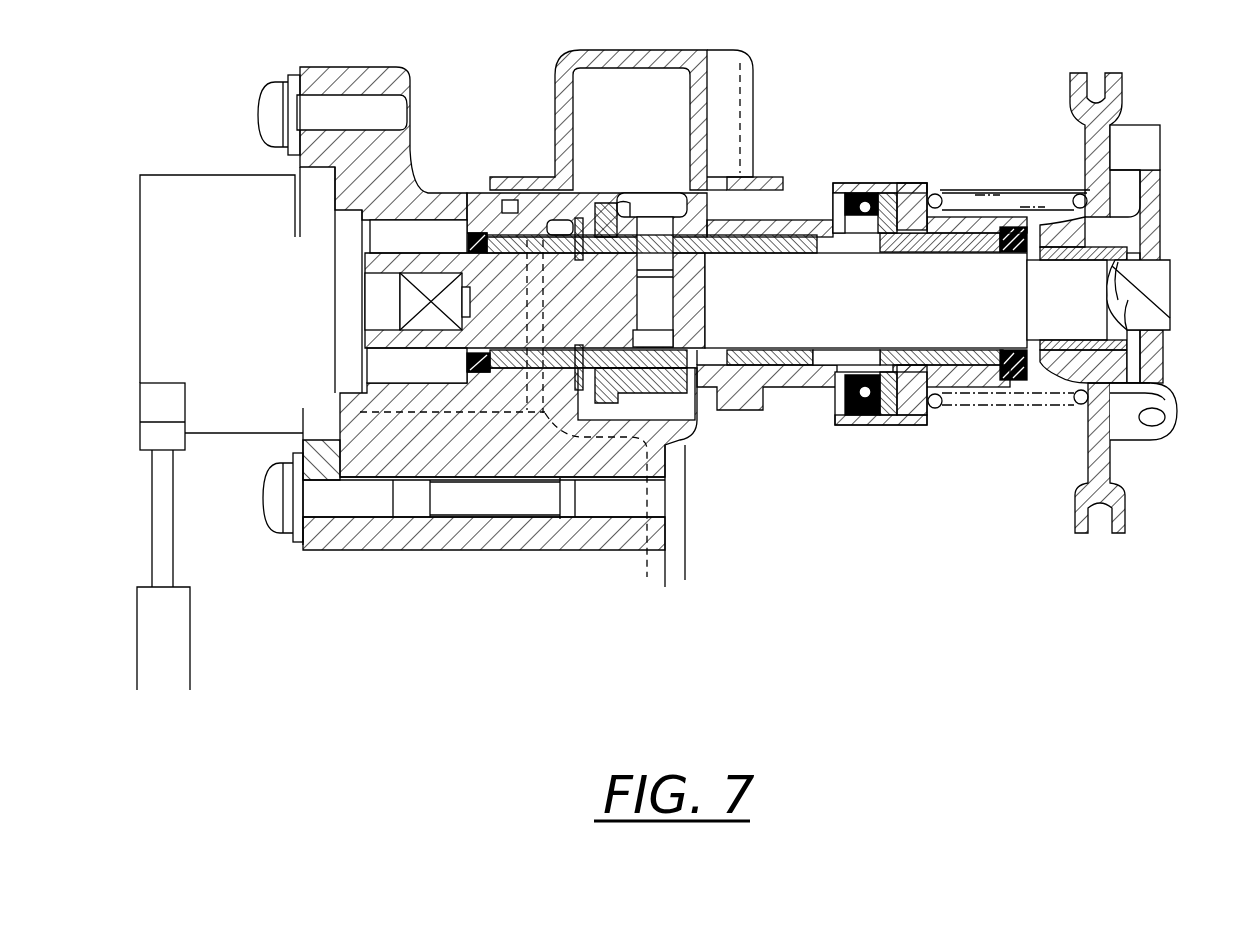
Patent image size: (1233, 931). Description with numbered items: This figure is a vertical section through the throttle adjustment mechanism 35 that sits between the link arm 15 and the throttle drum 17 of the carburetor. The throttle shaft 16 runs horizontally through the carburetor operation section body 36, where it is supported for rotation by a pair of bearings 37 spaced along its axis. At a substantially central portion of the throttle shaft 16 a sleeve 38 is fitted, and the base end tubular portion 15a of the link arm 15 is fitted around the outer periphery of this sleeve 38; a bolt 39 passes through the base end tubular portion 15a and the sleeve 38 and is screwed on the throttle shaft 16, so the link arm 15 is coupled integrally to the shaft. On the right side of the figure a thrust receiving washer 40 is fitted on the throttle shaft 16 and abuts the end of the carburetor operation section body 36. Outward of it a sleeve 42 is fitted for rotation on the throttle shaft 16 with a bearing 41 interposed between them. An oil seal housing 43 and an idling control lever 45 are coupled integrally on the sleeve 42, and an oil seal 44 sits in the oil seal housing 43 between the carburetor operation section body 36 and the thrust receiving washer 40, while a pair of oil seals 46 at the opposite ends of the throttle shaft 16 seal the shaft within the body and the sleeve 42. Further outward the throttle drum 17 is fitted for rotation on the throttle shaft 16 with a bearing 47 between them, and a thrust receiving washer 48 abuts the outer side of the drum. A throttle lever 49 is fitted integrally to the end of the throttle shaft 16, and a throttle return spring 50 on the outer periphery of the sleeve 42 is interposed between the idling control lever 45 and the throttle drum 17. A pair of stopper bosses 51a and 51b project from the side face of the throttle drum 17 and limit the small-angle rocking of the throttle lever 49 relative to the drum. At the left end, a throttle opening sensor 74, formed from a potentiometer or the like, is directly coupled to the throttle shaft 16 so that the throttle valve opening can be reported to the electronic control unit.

The link arm 15 is at (604, 215).
The base end tubular portion 15a is at (620, 203).
The throttle shaft 16 is at (1150, 300).
The throttle drum 17 is at (1115, 73).
The throttle adjustment mechanism 35 is at (945, 113).
The carburetor operation section body 36 is at (407, 150).
The bearings 37 is at (513, 227).
The sleeve 38 is at (553, 152).
The bolt 39 is at (660, 200).
The thrust receiving washer 40 is at (886, 420).
The bearing 41 is at (957, 378).
The sleeve 42 is at (993, 375).
The oil seal housing 43 is at (860, 185).
The oil seal 44 is at (870, 197).
The idling control lever 45 is at (912, 187).
The oil seals 46 is at (477, 228).
The bearing 47 is at (1063, 262).
The thrust receiving washer 48 is at (1160, 383).
The throttle lever 49 is at (1155, 208).
The throttle return spring 50 is at (1047, 193).
The stopper boss 51a is at (1153, 137).
The stopper boss 51b is at (1125, 427).
The throttle opening sensor 74 is at (140, 297).